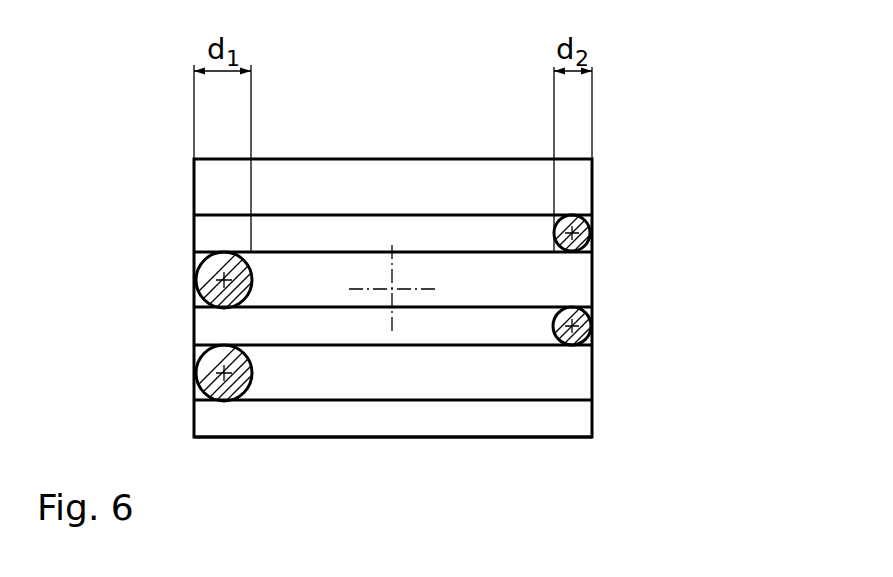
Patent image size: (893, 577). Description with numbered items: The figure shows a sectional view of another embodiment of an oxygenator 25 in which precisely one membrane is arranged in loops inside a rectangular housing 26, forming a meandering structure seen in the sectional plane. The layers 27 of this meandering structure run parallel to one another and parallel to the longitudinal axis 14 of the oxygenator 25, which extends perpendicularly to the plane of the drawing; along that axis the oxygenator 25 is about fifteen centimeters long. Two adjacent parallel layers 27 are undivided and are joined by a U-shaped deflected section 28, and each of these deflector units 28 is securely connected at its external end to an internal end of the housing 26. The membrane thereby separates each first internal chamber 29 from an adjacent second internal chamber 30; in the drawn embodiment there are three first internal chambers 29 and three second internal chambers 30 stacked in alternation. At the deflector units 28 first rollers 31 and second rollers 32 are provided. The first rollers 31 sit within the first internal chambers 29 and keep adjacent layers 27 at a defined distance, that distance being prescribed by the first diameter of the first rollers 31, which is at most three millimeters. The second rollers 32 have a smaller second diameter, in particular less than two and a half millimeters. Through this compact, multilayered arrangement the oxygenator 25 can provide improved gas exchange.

The longitudinal axis 14 is at (393, 289).
The oxygenator 25 is at (150, 182).
The housing 26 is at (592, 420).
The layers 27 is at (323, 215).
The U-shaped deflected section 28 is at (206, 300).
The first internal chamber 29 is at (528, 202).
The second internal chamber 30 is at (528, 248).
The first rollers 31 is at (198, 279).
The second rollers 32 is at (592, 233).